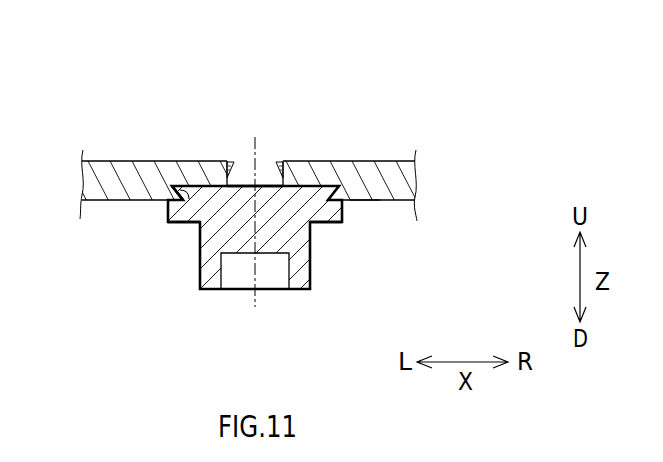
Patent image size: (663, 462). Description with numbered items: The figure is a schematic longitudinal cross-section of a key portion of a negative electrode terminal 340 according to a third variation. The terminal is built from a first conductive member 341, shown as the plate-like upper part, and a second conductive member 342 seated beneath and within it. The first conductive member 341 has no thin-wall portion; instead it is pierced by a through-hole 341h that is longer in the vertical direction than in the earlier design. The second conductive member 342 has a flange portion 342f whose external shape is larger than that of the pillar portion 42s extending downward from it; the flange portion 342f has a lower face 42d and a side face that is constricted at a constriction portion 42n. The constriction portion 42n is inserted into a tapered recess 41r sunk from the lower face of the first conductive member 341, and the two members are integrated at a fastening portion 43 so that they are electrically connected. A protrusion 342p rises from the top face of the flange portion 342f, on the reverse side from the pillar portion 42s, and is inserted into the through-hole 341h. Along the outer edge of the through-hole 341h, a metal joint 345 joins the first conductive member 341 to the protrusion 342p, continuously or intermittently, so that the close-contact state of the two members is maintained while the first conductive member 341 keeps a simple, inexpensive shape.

The negative electrode terminal 340 is at (361, 88).
The first conductive member 341 is at (379, 144).
The through-hole 341h is at (282, 180).
The second conductive member 342 is at (387, 272).
The protrusion 342p is at (246, 180).
The flange portion 342f is at (190, 215).
The metal joint 345 is at (227, 163).
The fastening portion 43 is at (170, 186).
The recess 41r is at (183, 197).
The constriction portion 42n is at (363, 200).
The lower face 42d is at (320, 224).
The pillar portion 42s is at (293, 238).